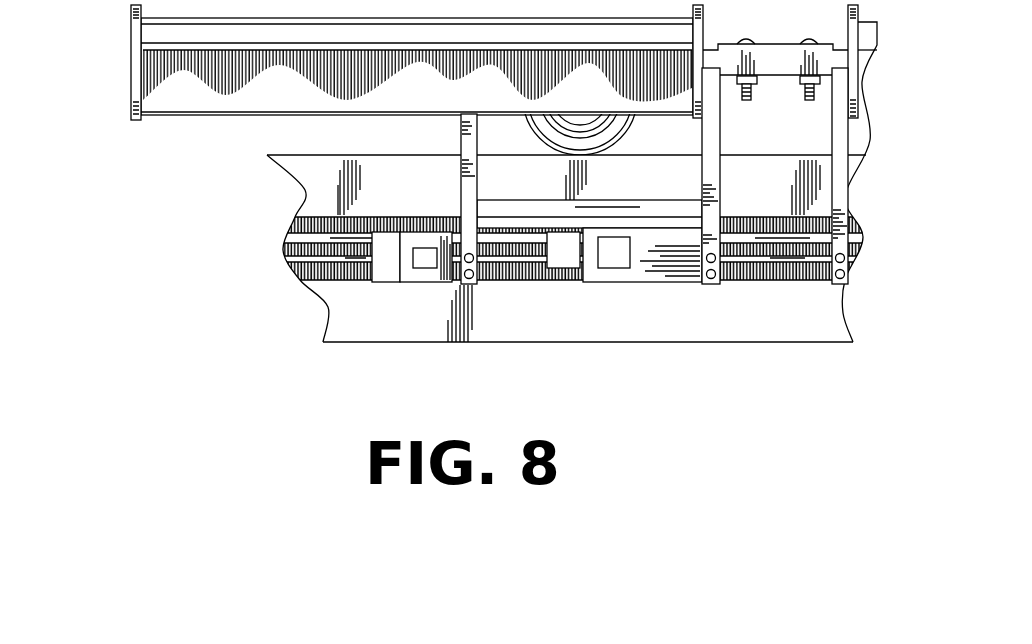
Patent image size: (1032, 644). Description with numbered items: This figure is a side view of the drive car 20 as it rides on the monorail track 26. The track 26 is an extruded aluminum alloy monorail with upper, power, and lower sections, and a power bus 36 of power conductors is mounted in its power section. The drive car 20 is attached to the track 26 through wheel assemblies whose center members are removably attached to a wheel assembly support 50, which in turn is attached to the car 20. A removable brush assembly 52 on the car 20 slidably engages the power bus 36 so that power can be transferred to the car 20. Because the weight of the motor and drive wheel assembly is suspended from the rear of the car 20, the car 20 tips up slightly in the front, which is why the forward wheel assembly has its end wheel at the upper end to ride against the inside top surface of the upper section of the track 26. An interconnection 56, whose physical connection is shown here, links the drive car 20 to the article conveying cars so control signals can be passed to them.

The drive car 20 is at (131, 81).
The monorail track 26 is at (368, 325).
The power bus 36 is at (325, 238).
The wheel assembly support 50 is at (459, 200).
The brush assembly 52 is at (563, 252).
The interconnection 56 is at (768, 64).